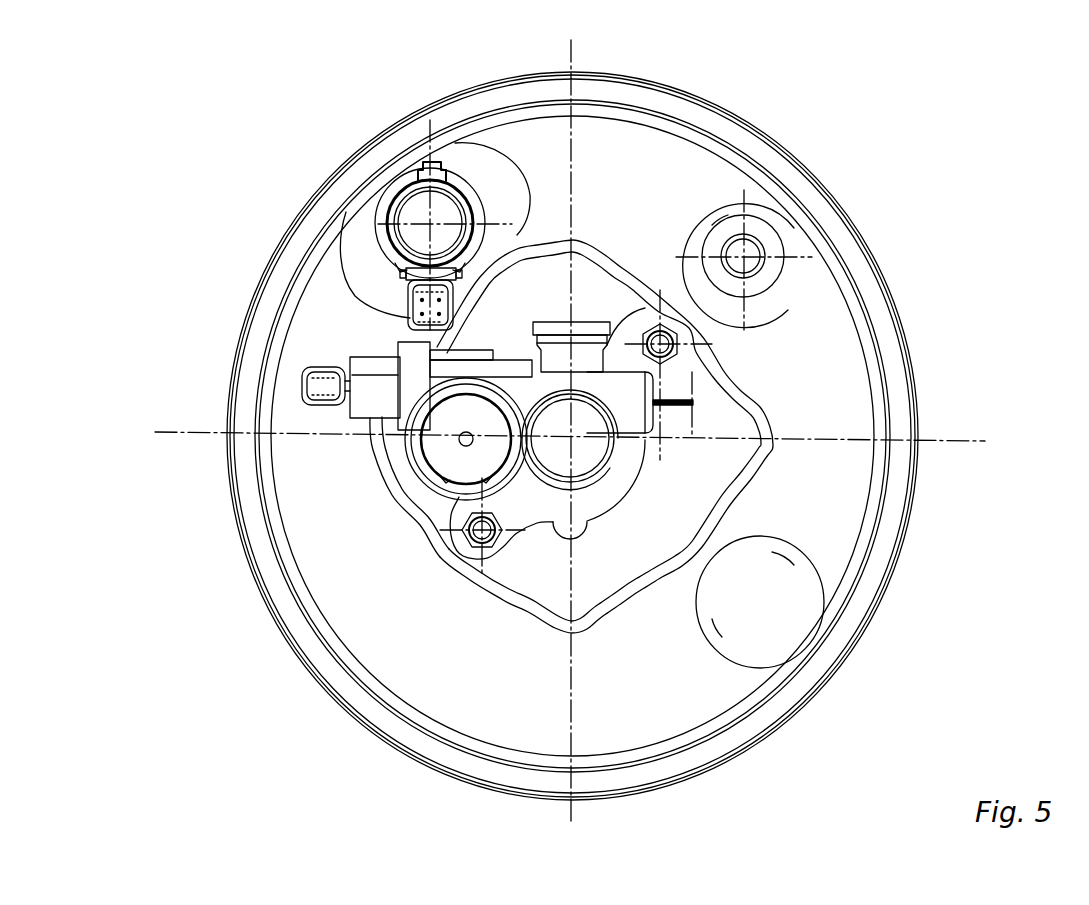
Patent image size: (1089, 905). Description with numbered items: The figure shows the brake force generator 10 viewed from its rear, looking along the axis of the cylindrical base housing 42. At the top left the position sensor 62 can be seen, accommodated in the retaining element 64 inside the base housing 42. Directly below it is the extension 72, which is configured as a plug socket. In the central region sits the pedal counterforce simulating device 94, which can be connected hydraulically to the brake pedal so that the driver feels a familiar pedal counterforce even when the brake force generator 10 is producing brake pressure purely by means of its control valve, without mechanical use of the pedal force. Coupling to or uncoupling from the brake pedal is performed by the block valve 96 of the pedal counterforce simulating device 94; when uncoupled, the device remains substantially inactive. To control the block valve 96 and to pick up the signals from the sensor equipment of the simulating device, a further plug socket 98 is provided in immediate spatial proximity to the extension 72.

The brake force generator 10 is at (936, 292).
The base housing 42 is at (772, 137).
The position sensor 62 is at (420, 213).
The retaining element 64 is at (450, 172).
The extension 72 is at (405, 320).
The pedal counterforce simulating device 94 is at (410, 465).
The block valve 96 is at (353, 418).
The further plug socket 98 is at (296, 406).